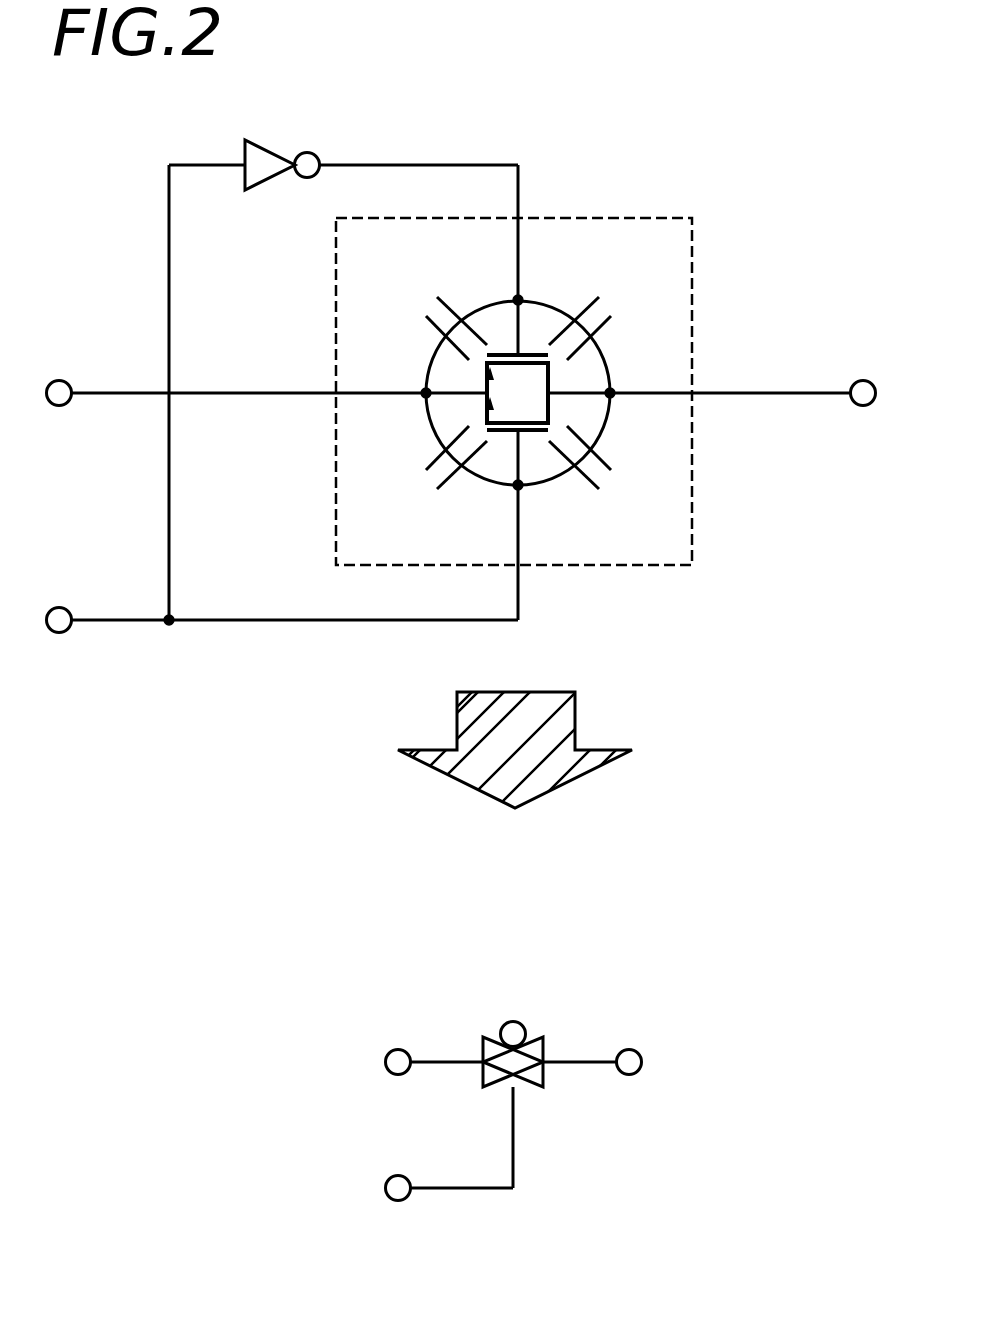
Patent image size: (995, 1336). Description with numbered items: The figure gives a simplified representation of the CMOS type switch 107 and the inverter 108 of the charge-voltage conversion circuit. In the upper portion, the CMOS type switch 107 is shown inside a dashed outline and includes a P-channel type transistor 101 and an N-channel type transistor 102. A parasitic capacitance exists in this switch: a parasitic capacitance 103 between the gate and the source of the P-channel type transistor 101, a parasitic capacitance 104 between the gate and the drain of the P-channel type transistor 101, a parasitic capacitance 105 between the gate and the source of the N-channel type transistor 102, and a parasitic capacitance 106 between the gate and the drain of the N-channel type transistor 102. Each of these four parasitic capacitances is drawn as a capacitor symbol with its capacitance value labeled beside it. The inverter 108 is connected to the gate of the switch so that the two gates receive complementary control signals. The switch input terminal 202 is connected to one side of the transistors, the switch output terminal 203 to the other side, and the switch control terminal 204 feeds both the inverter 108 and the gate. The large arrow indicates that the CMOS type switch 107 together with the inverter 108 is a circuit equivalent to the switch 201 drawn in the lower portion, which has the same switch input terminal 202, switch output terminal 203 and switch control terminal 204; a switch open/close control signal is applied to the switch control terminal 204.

The P-channel type transistor 101 is at (537, 355).
The N-channel type transistor 102 is at (533, 431).
The parasitic capacitance 103 is at (427, 316).
The parasitic capacitance 104 is at (611, 314).
The parasitic capacitance 105 is at (427, 468).
The parasitic capacitance 106 is at (605, 470).
The CMOS type switch 107 is at (627, 217).
The inverter 108 is at (278, 152).
The switch 201 is at (498, 1040).
The switch input terminal 202 is at (63, 382).
The switch output terminal 203 is at (867, 383).
The switch control terminal 204 is at (63, 608).